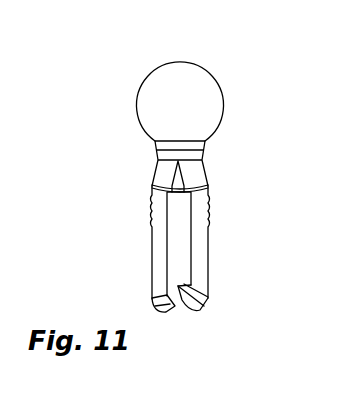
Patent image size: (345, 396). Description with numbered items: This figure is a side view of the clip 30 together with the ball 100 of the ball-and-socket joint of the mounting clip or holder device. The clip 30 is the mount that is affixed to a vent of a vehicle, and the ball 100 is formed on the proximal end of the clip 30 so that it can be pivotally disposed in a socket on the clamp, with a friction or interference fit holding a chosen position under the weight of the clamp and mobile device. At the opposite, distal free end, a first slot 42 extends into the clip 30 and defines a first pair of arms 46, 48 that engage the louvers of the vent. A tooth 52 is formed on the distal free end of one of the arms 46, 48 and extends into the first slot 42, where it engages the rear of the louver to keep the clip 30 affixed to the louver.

The ball 100 is at (207, 108).
The clip 30 is at (148, 86).
The first slot 42 is at (178, 222).
The first arm 46 is at (197, 240).
The second arm 48 is at (156, 263).
The tooth 52 is at (202, 296).